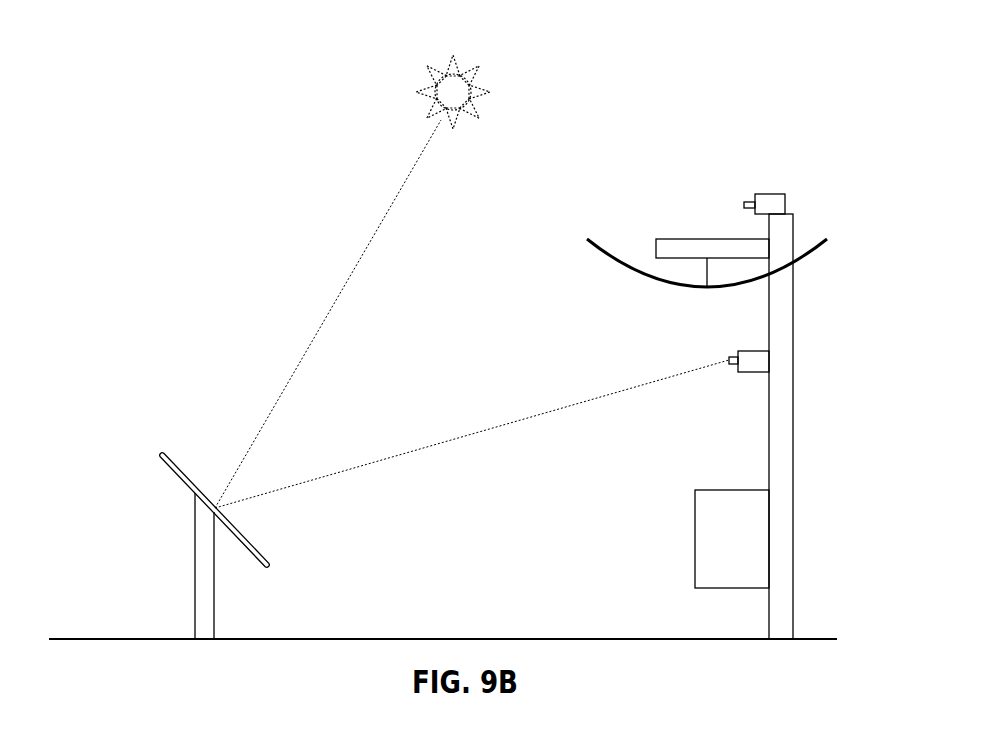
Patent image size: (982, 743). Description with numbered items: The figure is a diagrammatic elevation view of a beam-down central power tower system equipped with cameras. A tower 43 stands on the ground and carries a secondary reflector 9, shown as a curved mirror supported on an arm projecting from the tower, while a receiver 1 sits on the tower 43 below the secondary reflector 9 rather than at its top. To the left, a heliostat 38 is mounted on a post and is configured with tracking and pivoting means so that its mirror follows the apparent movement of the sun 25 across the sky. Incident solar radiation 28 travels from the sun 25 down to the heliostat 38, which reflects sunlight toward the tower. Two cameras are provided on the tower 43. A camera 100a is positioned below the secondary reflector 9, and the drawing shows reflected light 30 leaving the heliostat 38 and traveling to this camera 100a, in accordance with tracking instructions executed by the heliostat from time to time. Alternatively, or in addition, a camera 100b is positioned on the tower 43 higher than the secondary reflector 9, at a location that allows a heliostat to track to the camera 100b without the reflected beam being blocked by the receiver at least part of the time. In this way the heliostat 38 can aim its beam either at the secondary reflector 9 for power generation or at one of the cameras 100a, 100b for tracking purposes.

The receiver 1 is at (732, 539).
The secondary reflector 9 is at (812, 269).
The sun 25 is at (453, 92).
The incident solar radiation 28 is at (330, 300).
The reflected light 30 is at (447, 445).
The heliostat 38 is at (182, 555).
The tower 43 is at (782, 432).
The camera 100a is at (755, 372).
The camera 100b is at (755, 193).